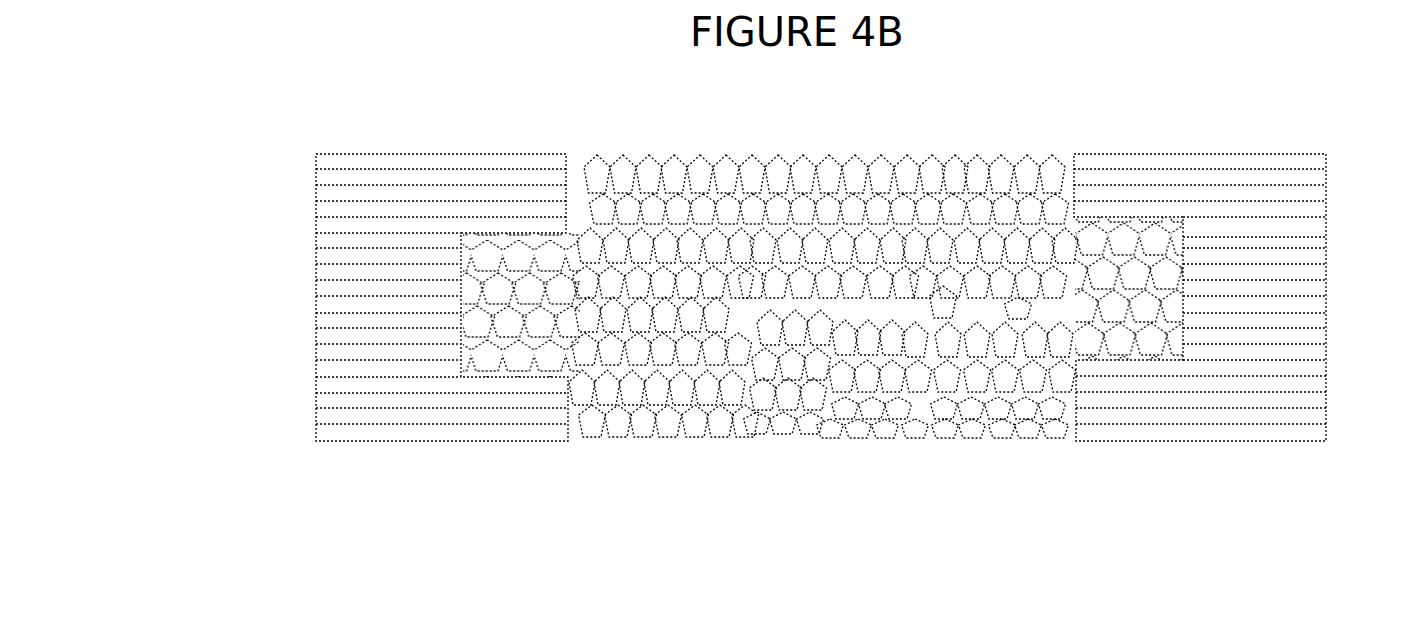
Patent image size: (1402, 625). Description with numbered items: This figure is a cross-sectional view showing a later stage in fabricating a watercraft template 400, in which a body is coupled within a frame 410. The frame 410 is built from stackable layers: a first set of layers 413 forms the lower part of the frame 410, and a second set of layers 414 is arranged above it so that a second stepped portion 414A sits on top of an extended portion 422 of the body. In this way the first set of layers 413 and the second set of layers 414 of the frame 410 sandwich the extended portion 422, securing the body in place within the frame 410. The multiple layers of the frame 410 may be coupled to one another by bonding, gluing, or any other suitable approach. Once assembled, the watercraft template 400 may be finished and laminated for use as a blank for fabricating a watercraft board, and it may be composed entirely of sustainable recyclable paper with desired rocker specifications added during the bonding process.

The watercraft template 400 is at (795, 124).
The frame 410 is at (761, 294).
The first set of layers 413 is at (513, 427).
The second set of layers 414 is at (1241, 170).
The second stepped portion 414A is at (512, 181).
The extended portion 422 is at (465, 294).